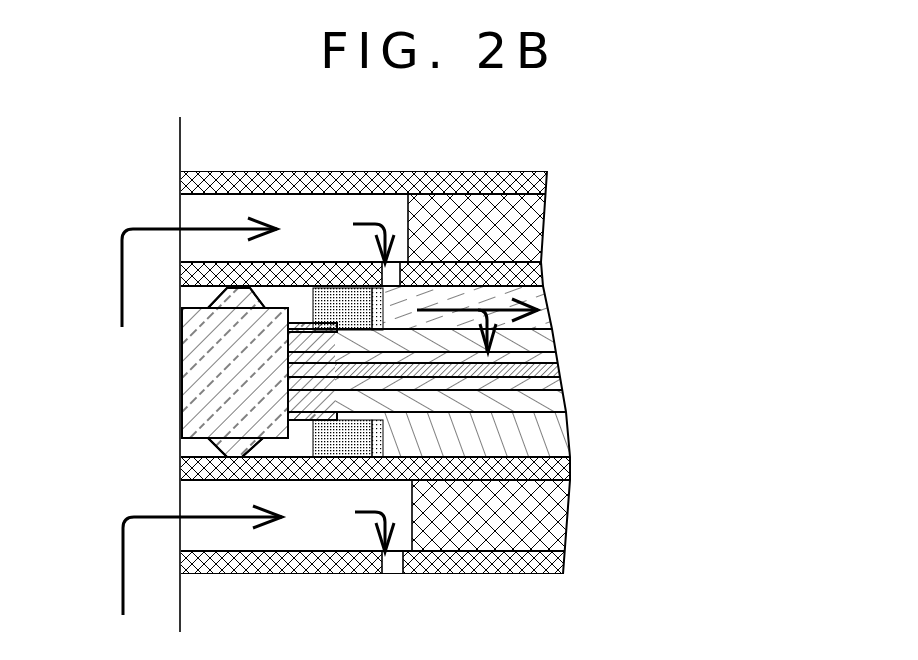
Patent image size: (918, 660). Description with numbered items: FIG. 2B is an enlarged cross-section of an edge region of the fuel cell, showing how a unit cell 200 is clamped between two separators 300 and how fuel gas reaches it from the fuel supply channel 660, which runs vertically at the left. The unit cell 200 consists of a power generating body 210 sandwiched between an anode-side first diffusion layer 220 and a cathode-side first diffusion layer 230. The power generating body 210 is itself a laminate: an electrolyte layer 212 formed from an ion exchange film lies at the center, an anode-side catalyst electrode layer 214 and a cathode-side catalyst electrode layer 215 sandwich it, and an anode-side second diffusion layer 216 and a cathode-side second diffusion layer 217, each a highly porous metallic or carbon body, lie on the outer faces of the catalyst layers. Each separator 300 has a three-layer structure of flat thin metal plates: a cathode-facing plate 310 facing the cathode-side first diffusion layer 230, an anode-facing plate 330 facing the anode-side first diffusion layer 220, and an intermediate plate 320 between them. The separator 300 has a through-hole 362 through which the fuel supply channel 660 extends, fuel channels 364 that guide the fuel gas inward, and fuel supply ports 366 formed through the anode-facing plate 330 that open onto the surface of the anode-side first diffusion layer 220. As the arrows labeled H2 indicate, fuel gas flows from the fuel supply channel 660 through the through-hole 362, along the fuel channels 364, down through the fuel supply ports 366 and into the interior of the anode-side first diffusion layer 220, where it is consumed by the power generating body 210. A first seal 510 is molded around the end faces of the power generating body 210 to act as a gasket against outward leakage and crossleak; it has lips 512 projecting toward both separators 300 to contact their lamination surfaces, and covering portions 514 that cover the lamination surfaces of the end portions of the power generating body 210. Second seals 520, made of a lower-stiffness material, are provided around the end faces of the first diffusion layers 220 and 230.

The fuel supply channel 660 is at (179, 155).
The through-hole 362 is at (180, 191).
The fuel channels 364 is at (322, 220).
The fuel supply ports 366 is at (397, 262).
The cathode-facing plate 310 is at (547, 180).
The intermediate plate 320 is at (541, 225).
The anode-facing plate 330 is at (543, 270).
The separator 300 is at (466, 372).
The anode-side first diffusion layer 220 is at (544, 293).
The anode-side second diffusion layer 216 is at (555, 340).
The anode-side catalyst electrode layer 214 is at (557, 360).
The electrolyte layer 212 is at (560, 368).
The cathode-side catalyst electrode layer 215 is at (565, 383).
The cathode-side second diffusion layer 217 is at (486, 417).
The power generating body 210 is at (519, 370).
The cathode-side first diffusion layer 230 is at (567, 443).
The unit cell 200 is at (553, 370).
The first seal 510 is at (197, 370).
The lips 512 is at (212, 300).
The covering portions 514 is at (294, 322).
The second seals 520 is at (342, 438).
The hydrogen flow H2 is at (330, 409).